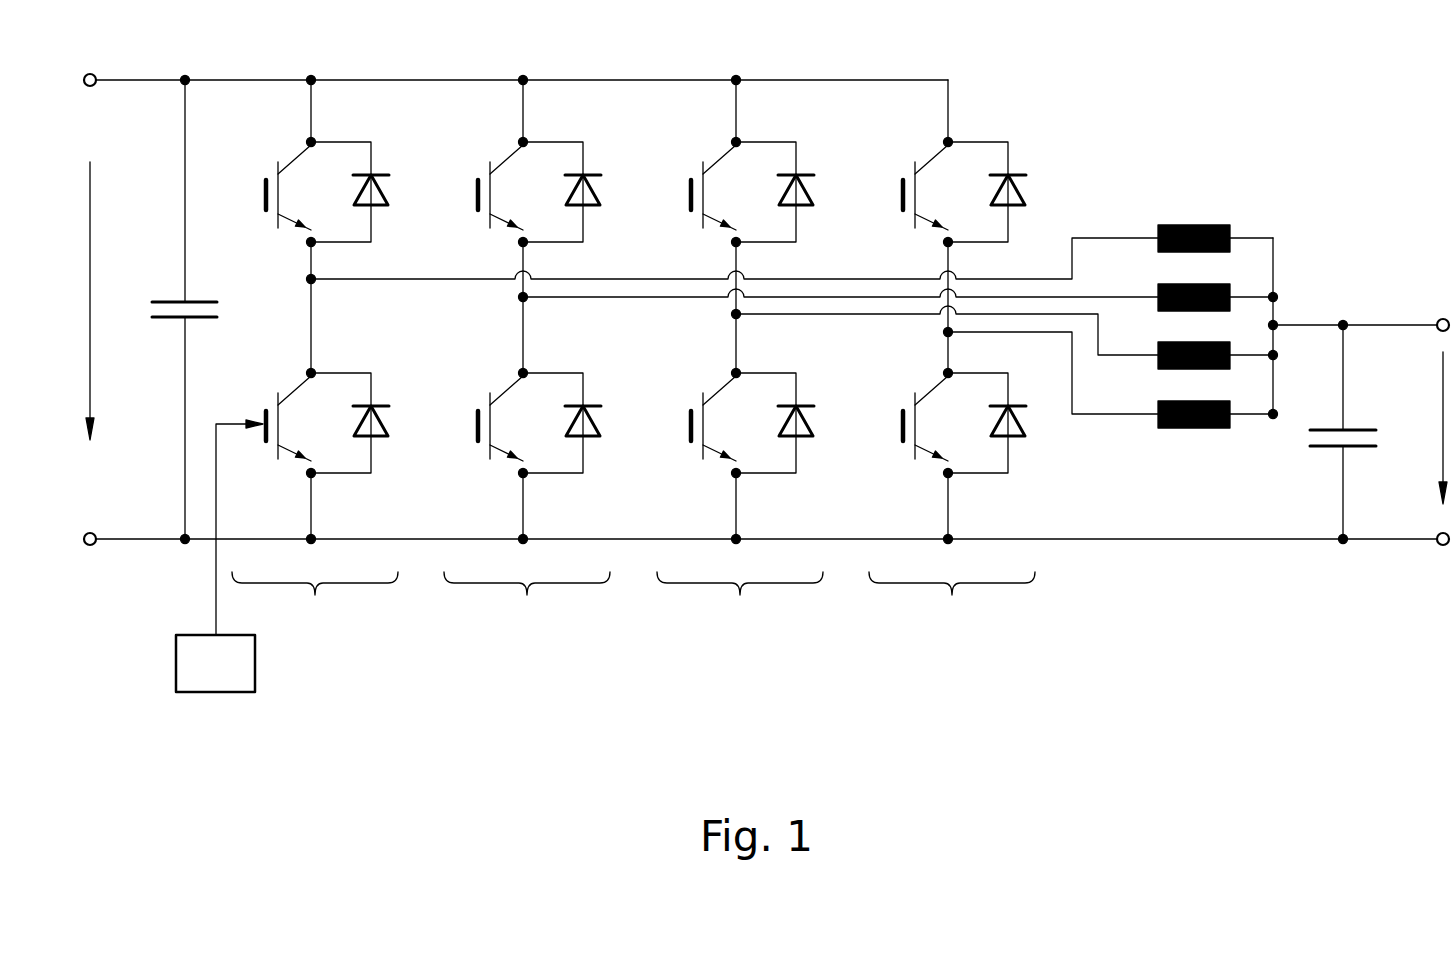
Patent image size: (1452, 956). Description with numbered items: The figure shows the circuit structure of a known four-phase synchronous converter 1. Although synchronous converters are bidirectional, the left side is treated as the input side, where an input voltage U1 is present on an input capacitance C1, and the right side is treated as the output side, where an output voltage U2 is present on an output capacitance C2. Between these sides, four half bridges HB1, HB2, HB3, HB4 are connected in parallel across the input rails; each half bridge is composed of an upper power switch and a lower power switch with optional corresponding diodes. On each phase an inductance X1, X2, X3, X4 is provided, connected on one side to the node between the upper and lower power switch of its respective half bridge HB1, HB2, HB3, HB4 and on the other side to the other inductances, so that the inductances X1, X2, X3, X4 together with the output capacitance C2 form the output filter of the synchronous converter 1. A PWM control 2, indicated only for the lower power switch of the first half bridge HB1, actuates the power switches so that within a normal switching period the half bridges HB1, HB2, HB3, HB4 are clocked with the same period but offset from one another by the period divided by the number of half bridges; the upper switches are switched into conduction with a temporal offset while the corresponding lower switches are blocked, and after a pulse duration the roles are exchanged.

The synchronous converter 1 is at (1158, 94).
The PWM control 2 is at (230, 677).
The input capacitance C1 is at (179, 310).
The output capacitance C2 is at (1338, 432).
The input voltage U1 is at (112, 301).
The output voltage U2 is at (1424, 428).
The half bridge HB1 is at (324, 362).
The half bridge HB2 is at (537, 362).
The half bridge HB3 is at (750, 362).
The half bridge HB4 is at (967, 363).
The inductance X1 is at (1215, 220).
The inductance X2 is at (1196, 280).
The inductance X3 is at (1196, 338).
The inductance X4 is at (1196, 397).